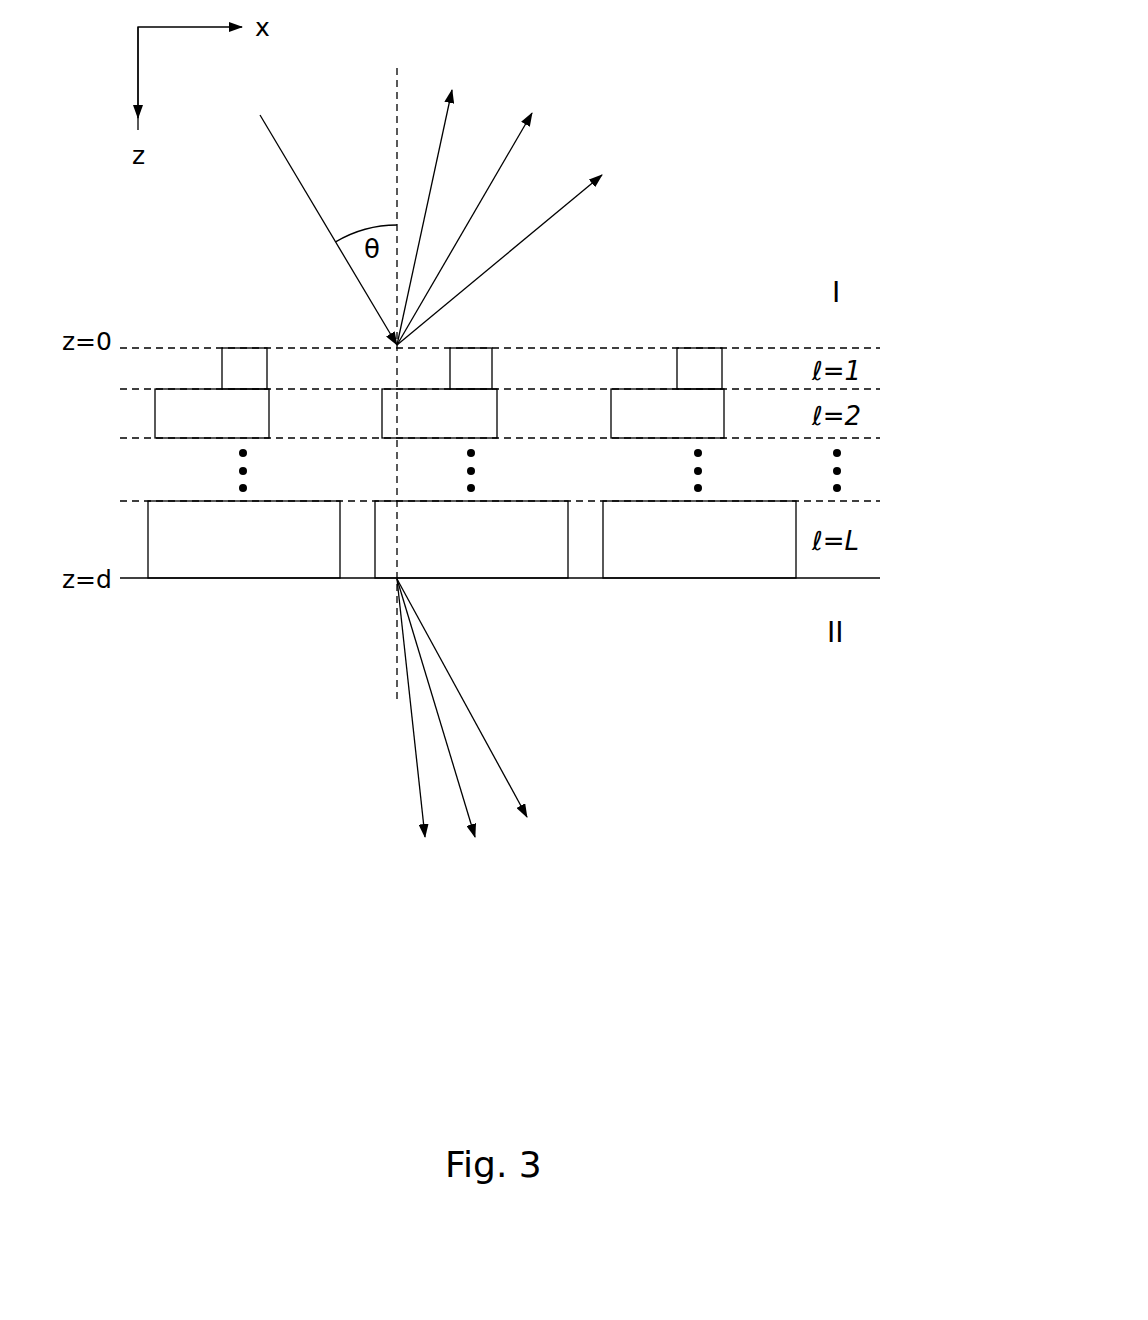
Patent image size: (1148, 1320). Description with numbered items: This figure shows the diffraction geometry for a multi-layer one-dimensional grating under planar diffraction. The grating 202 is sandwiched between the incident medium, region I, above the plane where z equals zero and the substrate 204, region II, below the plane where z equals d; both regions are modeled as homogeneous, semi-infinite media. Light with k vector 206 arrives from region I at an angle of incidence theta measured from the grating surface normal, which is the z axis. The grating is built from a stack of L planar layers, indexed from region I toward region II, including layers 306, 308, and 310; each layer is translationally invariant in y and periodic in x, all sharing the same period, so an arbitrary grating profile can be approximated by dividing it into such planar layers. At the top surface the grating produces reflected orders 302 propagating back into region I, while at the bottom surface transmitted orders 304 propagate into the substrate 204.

The grating 202 is at (198, 318).
The substrate 204 is at (785, 645).
The k vector 206 is at (302, 187).
The reflected orders 302 is at (598, 110).
The transmitted orders 304 is at (528, 750).
The grating layer 306 is at (590, 383).
The grating layer 308 is at (347, 427).
The grating layer 310 is at (718, 551).